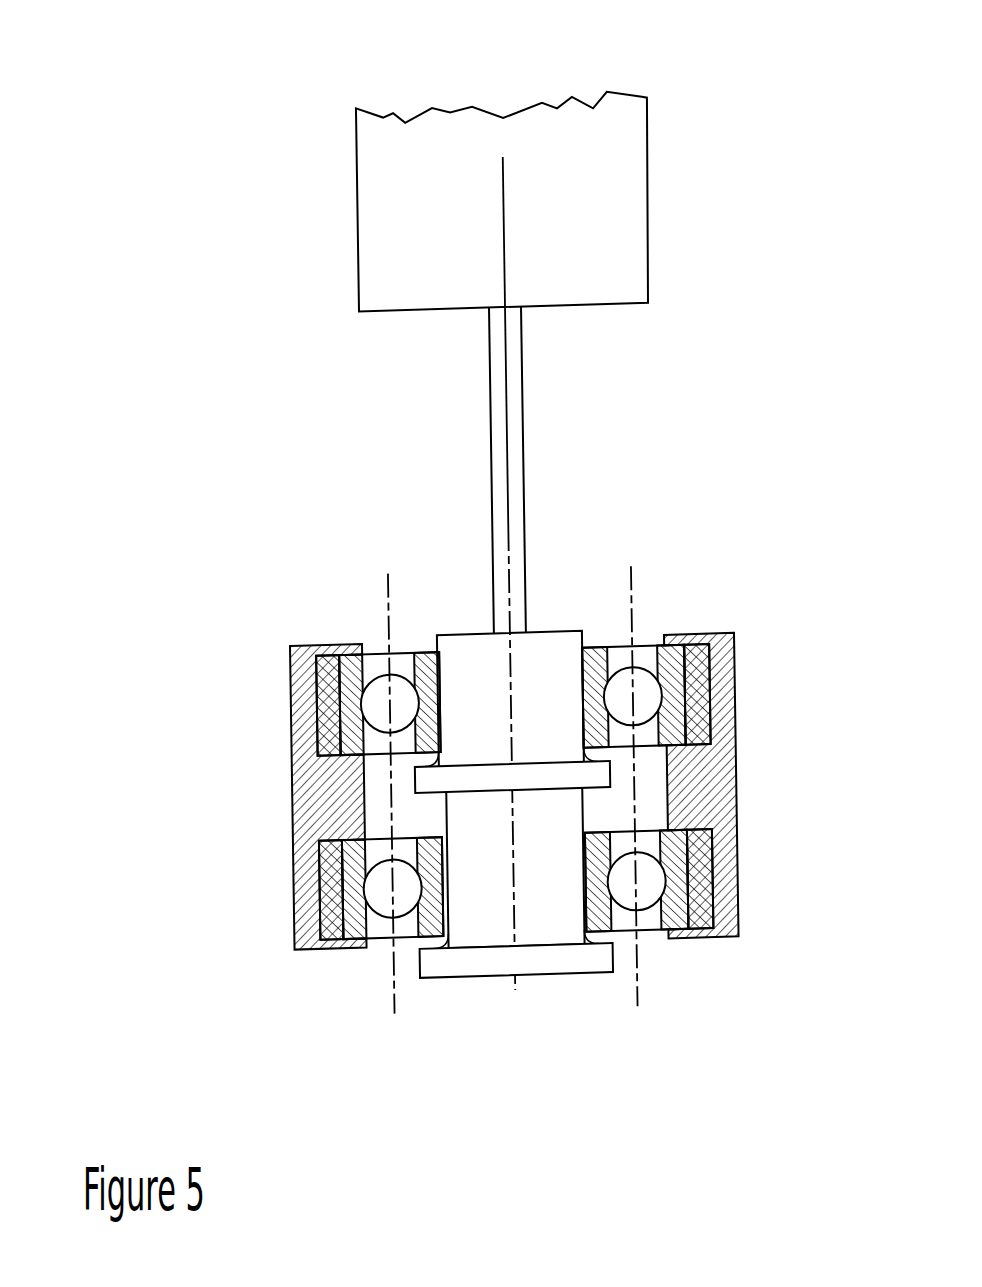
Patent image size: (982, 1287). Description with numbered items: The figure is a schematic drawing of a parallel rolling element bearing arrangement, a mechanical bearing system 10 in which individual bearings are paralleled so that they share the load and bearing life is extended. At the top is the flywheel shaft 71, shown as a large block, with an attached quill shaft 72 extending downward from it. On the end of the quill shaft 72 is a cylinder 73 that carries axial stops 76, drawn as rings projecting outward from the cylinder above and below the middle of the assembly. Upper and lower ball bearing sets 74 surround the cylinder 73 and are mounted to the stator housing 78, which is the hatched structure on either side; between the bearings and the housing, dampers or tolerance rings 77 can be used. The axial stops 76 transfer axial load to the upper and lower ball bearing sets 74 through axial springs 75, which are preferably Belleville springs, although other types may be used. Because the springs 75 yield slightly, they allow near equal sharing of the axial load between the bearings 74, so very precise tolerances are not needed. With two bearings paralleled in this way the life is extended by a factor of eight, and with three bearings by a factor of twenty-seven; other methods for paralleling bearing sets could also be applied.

The flywheel assembly 10 is at (172, 48).
The flywheel shaft 71 is at (383, 216).
The quill shaft 72 is at (420, 574).
The cylinder 73 is at (559, 716).
The ball bearing sets 74 is at (514, 803).
The axial springs 75 is at (558, 830).
The axial stops 76 is at (397, 931).
The dampers or tolerance rings 77 is at (596, 792).
The stator housing 78 is at (454, 798).